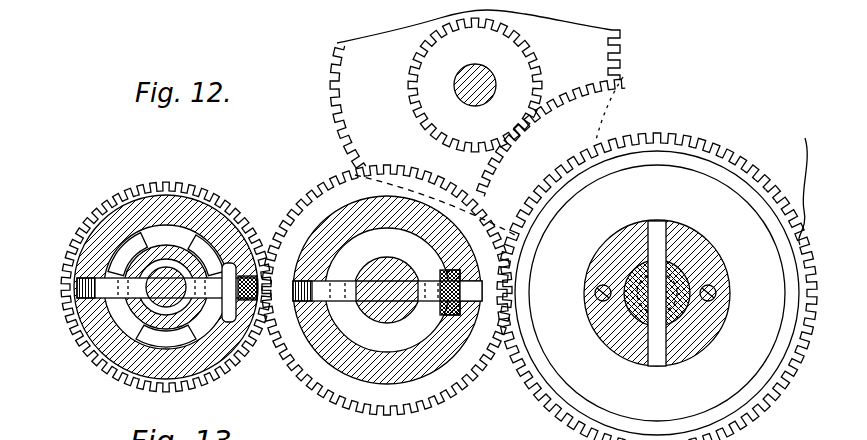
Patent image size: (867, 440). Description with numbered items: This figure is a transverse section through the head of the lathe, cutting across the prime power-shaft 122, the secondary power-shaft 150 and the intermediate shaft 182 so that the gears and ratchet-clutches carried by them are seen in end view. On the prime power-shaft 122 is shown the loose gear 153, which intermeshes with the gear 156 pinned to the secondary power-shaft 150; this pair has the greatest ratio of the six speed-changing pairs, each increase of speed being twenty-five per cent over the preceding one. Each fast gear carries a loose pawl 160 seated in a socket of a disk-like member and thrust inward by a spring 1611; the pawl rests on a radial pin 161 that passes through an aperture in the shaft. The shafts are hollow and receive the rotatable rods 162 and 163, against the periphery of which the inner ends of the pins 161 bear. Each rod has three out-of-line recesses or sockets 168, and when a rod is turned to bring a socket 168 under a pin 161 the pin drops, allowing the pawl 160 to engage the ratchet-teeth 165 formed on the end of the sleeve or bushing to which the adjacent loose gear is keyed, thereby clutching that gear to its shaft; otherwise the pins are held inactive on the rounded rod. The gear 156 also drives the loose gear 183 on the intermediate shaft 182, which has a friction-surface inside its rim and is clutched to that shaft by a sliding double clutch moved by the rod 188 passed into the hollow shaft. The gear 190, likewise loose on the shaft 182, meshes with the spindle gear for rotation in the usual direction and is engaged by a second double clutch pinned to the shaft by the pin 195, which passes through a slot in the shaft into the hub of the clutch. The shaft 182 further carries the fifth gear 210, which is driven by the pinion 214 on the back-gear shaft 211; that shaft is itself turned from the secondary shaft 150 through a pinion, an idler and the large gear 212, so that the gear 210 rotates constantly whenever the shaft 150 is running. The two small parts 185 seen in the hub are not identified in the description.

The prime power-shaft 122 is at (150, 246).
The secondary power-shaft 150 is at (360, 252).
The loose gear 153 is at (77, 253).
The gear 156 is at (390, 186).
The loose pawl 160 is at (230, 216).
The pin 161 is at (229, 323).
The spring 1611 is at (253, 268).
The rotatable rod 162 is at (86, 343).
The rotatable rod 163 is at (378, 356).
The ratchet-teeth 165 is at (168, 248).
The recesses or sockets 168 is at (143, 336).
The intermediate shaft 182 is at (628, 262).
The loose gear 183 is at (659, 149).
The screw 185 is at (592, 296).
The rod 188 is at (668, 320).
The gear 190 is at (714, 132).
The pin 195 is at (637, 356).
The fifth gear 210 is at (686, 92).
The back-gear shaft 211 is at (494, 75).
The large gear 212 is at (334, 87).
The pinion 214 is at (452, 58).